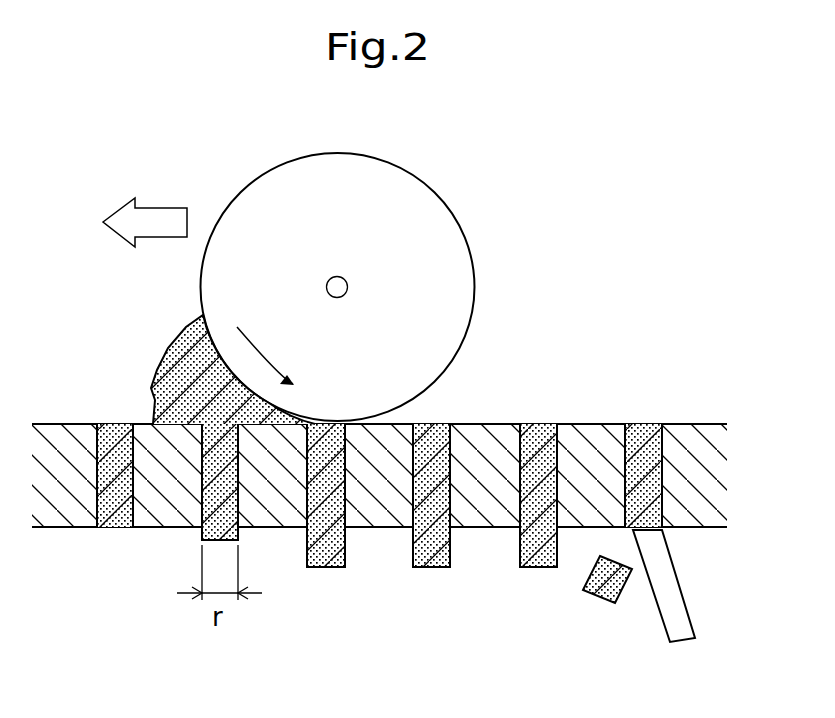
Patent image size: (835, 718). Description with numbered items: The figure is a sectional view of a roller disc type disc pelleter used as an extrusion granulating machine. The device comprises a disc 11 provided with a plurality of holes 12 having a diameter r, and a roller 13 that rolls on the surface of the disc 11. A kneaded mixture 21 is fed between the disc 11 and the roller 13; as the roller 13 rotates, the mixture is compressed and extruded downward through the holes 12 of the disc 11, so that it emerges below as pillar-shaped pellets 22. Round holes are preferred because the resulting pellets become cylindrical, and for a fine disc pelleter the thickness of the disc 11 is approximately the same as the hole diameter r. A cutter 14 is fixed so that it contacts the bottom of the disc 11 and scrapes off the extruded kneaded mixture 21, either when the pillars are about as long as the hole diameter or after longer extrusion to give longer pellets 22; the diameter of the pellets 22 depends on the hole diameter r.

The disc 11 is at (683, 432).
The holes 12 is at (108, 452).
The roller 13 is at (428, 337).
The cutter 14 is at (677, 613).
The kneaded mixture 21 is at (185, 348).
The pillar-shaped pellets 22 is at (593, 593).